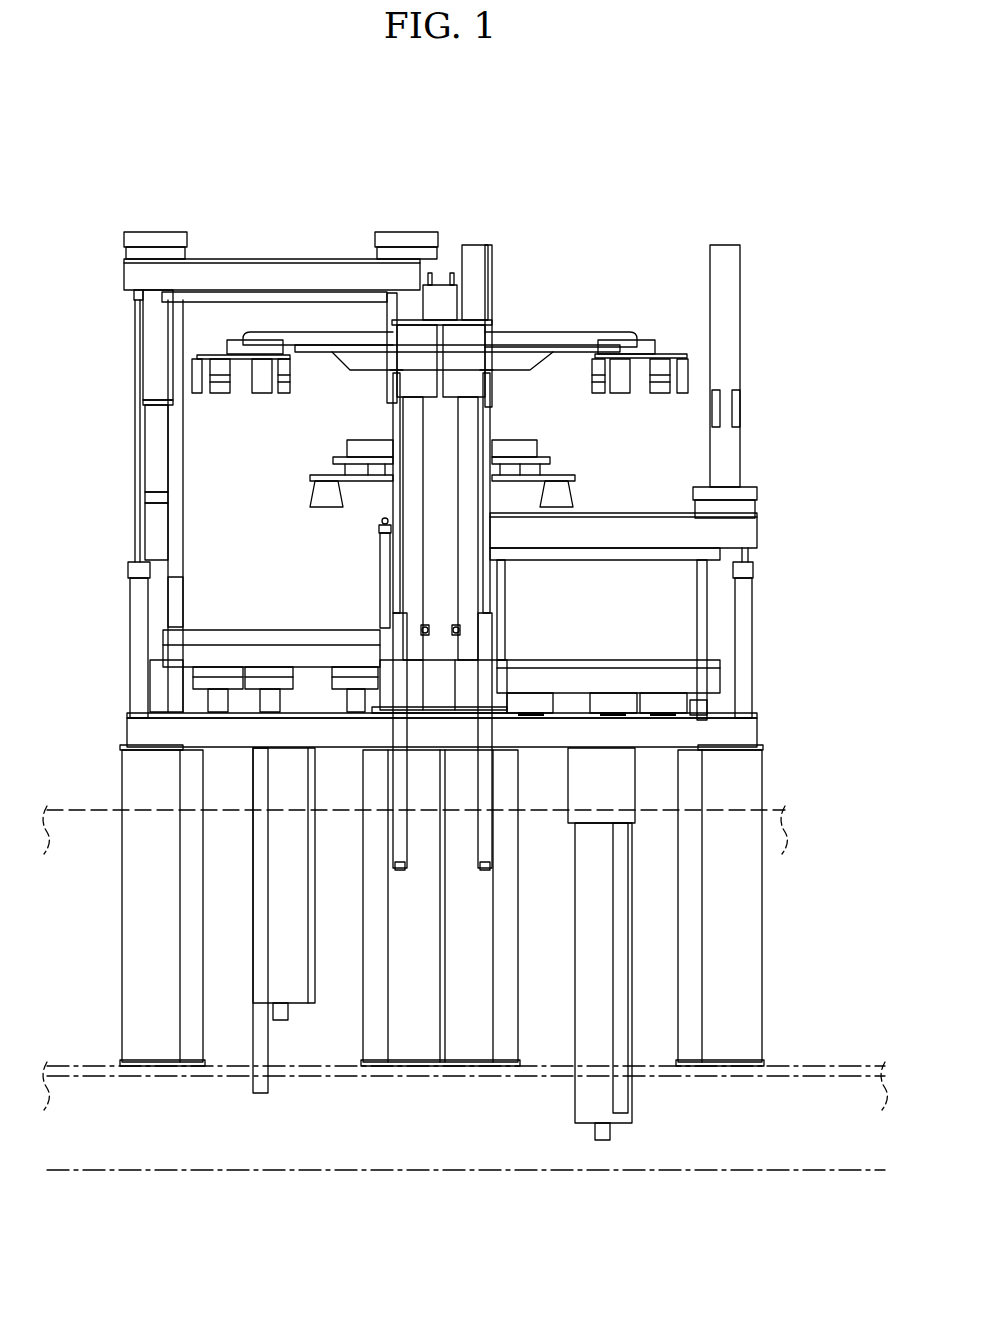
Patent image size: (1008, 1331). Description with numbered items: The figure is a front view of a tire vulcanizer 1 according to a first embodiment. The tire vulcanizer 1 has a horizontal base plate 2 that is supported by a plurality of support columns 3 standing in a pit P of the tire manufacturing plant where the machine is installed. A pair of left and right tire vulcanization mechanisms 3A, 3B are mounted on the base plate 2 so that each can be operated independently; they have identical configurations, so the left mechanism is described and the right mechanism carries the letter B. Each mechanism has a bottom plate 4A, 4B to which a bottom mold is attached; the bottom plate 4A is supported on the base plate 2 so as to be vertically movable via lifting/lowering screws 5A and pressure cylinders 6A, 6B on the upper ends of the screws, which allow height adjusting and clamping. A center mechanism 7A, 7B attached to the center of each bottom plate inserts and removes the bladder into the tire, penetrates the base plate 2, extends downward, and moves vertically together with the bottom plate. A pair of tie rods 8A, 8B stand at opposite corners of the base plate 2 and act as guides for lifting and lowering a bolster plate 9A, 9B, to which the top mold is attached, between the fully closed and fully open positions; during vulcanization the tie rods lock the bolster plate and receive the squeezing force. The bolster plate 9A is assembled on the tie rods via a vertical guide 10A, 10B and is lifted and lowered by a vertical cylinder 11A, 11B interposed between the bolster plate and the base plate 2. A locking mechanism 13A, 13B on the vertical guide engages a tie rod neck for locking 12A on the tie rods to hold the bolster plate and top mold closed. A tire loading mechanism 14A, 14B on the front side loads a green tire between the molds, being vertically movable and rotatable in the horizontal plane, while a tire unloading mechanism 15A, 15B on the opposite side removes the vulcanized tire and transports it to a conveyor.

The tire vulcanizer 1 is at (440, 150).
The base plate 2 is at (137, 732).
The support columns 3 is at (150, 884).
The tire vulcanization mechanism 3A is at (296, 234).
The tire vulcanization mechanism 3B is at (616, 490).
The bottom plate 4A is at (305, 650).
The bottom plate 4B is at (606, 680).
The lifting/lowering screws 5A is at (355, 715).
The pressure cylinders 6A is at (217, 670).
The pressure cylinders 6B is at (538, 700).
The center mechanism 7A is at (285, 790).
The center mechanism 7B is at (588, 900).
The tie rods 8A is at (152, 456).
The tie rods 8B is at (735, 312).
The bolster plate 9A is at (223, 262).
The bolster plate 9B is at (665, 513).
The vertical guide 10A is at (135, 273).
The vertical guide 10B is at (742, 536).
The vertical cylinder 11A is at (136, 607).
The vertical cylinder 11B is at (748, 627).
The tie rod neck for locking 12A is at (150, 497).
The locking mechanism 13A is at (152, 232).
The locking mechanism 13B is at (742, 496).
The tire loading mechanism 14A is at (260, 383).
The tire loading mechanism 14B is at (562, 334).
The tire unloading mechanism 15A is at (318, 494).
The tire unloading mechanism 15B is at (557, 478).
The pit P is at (73, 980).